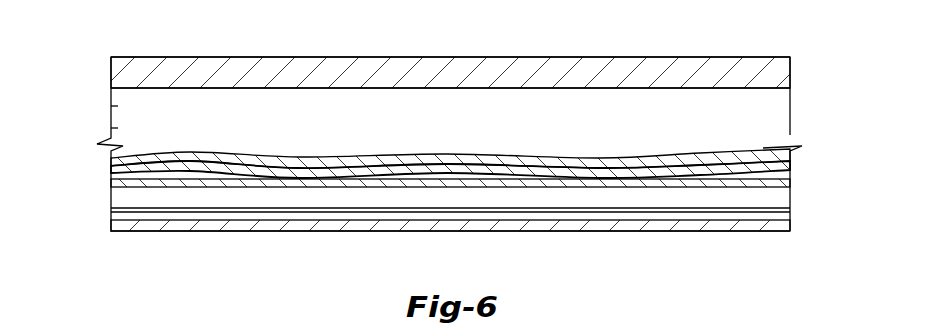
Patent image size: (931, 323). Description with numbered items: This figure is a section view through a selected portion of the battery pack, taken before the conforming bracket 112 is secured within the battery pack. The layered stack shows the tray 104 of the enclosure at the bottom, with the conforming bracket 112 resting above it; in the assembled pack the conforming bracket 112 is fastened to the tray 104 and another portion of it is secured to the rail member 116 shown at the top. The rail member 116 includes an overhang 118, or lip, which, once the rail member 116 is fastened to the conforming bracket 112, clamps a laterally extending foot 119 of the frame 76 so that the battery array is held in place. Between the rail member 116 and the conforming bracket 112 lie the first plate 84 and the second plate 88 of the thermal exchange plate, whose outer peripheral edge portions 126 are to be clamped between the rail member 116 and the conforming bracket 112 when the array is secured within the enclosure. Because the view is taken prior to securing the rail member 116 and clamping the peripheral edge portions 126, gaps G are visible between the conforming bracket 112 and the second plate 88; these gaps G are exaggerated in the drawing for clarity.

The rail member 116 is at (125, 65).
The overhang 118 is at (117, 74).
The laterally extending foot 119 is at (118, 106).
The frame 76 is at (118, 128).
The first plate 84 is at (118, 163).
The second plate 88 is at (118, 175).
The conforming bracket 112 is at (118, 184).
The tray 104 is at (118, 227).
The outer peripheral edge portions 126 is at (763, 148).
The gaps G is at (193, 182).